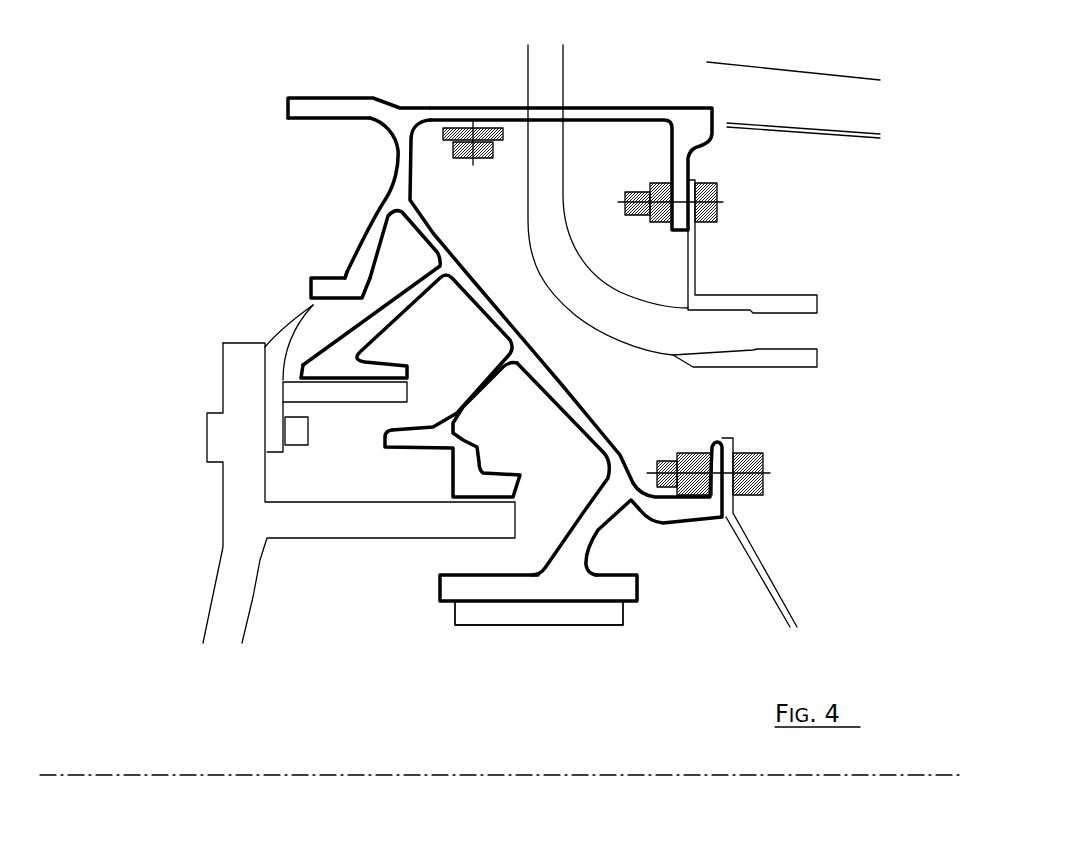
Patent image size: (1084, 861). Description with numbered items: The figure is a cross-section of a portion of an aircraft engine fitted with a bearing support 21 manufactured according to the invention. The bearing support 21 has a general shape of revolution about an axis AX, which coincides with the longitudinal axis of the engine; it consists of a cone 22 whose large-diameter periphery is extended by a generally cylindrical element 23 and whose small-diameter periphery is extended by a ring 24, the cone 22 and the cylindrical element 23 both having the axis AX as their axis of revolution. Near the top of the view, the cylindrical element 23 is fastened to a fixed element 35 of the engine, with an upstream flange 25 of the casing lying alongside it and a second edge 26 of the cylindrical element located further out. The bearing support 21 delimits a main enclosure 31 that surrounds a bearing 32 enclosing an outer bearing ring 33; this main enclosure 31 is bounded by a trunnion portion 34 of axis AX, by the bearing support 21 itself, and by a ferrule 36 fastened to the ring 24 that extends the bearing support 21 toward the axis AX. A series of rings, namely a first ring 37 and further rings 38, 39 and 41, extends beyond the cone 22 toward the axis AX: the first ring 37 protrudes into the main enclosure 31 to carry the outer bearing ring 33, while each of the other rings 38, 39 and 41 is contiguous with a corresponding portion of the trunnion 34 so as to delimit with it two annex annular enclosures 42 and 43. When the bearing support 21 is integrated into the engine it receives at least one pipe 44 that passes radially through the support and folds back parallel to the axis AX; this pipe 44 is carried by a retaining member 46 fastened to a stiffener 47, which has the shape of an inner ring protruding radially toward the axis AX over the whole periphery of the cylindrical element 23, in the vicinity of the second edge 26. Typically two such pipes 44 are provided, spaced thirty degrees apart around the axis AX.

The bearing support 21 is at (352, 194).
The cone 22 is at (628, 440).
The cylindrical element 23 is at (600, 108).
The ring 24 is at (722, 440).
The upstream flange of casing 25 is at (288, 100).
The second edge 26 is at (717, 118).
The main enclosure 31 is at (562, 469).
The bearing 32 is at (622, 662).
The outer bearing ring 33 is at (509, 627).
The trunnion portion 34 is at (195, 575).
The fixed element 35 is at (473, 107).
The ferrule 36 is at (752, 541).
The first ring 37 is at (440, 582).
The ring 38 is at (390, 438).
The ring 39 is at (300, 370).
The ring 41 is at (313, 278).
The annex annular enclosure 42 is at (406, 352).
The annex annular enclosure 43 is at (371, 288).
The pipe 44 is at (598, 283).
The retaining member 46 is at (693, 265).
The stiffener 47 is at (680, 165).
The axis AX is at (94, 772).